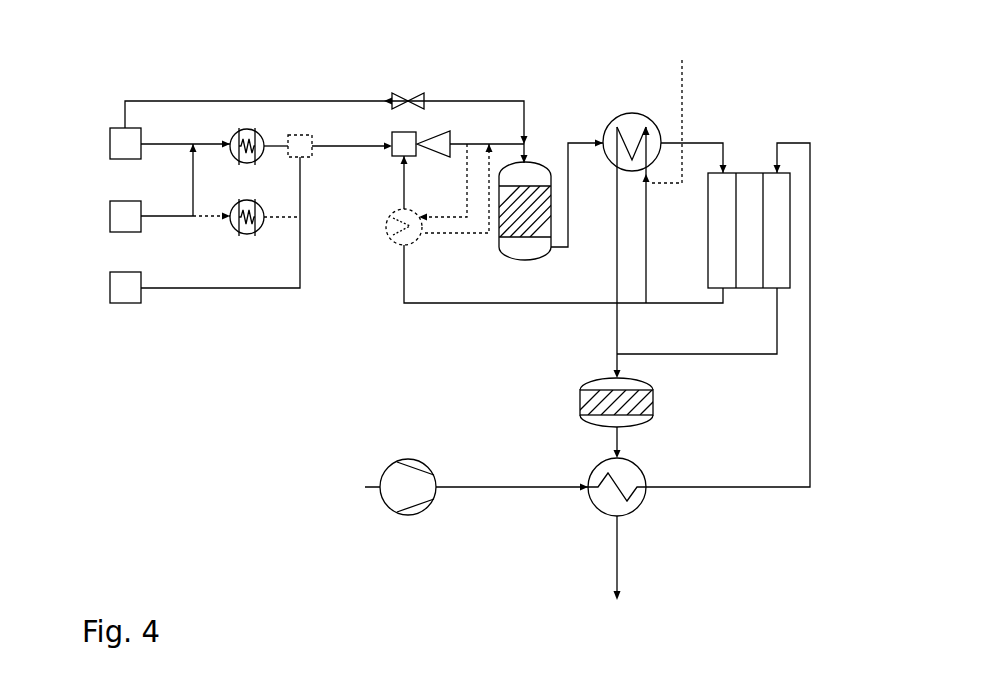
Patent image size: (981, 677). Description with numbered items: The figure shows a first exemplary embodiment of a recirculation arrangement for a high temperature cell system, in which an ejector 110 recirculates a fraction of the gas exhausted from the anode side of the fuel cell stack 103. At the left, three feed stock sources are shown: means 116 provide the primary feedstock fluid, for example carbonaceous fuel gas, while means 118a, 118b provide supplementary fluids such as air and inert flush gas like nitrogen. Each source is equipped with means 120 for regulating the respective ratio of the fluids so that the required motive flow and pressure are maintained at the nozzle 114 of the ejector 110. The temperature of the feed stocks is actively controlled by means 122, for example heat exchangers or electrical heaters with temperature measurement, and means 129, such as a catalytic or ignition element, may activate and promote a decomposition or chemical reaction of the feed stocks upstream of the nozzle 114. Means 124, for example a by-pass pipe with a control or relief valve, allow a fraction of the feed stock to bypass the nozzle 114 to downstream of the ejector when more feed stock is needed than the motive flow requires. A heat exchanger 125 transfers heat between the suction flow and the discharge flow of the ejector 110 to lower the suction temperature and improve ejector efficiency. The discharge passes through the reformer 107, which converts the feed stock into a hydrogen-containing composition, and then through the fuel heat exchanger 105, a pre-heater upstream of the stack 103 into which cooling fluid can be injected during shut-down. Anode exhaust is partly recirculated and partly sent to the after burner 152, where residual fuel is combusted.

The fuel cell stack 103 is at (760, 122).
The fuel heat exchanger 105 is at (615, 112).
The reformer 107 is at (540, 158).
The ejector 110 is at (426, 165).
The nozzle 114 is at (392, 156).
The means for providing primary feedstock fluid 116 is at (153, 140).
The means for providing supplementary fluid 118a is at (160, 223).
The means for providing supplementary fluid 118b is at (167, 293).
The means for regulating respective ratio of the fluids 120 is at (105, 145).
The means for actively controlling temperature 122 is at (263, 200).
The means for by-passing the nozzle 124 is at (428, 94).
The heat exchanger 125 is at (387, 228).
The means for activating and promoting a decomposition or chemical reaction 129 is at (318, 158).
The after burner 152 is at (656, 400).